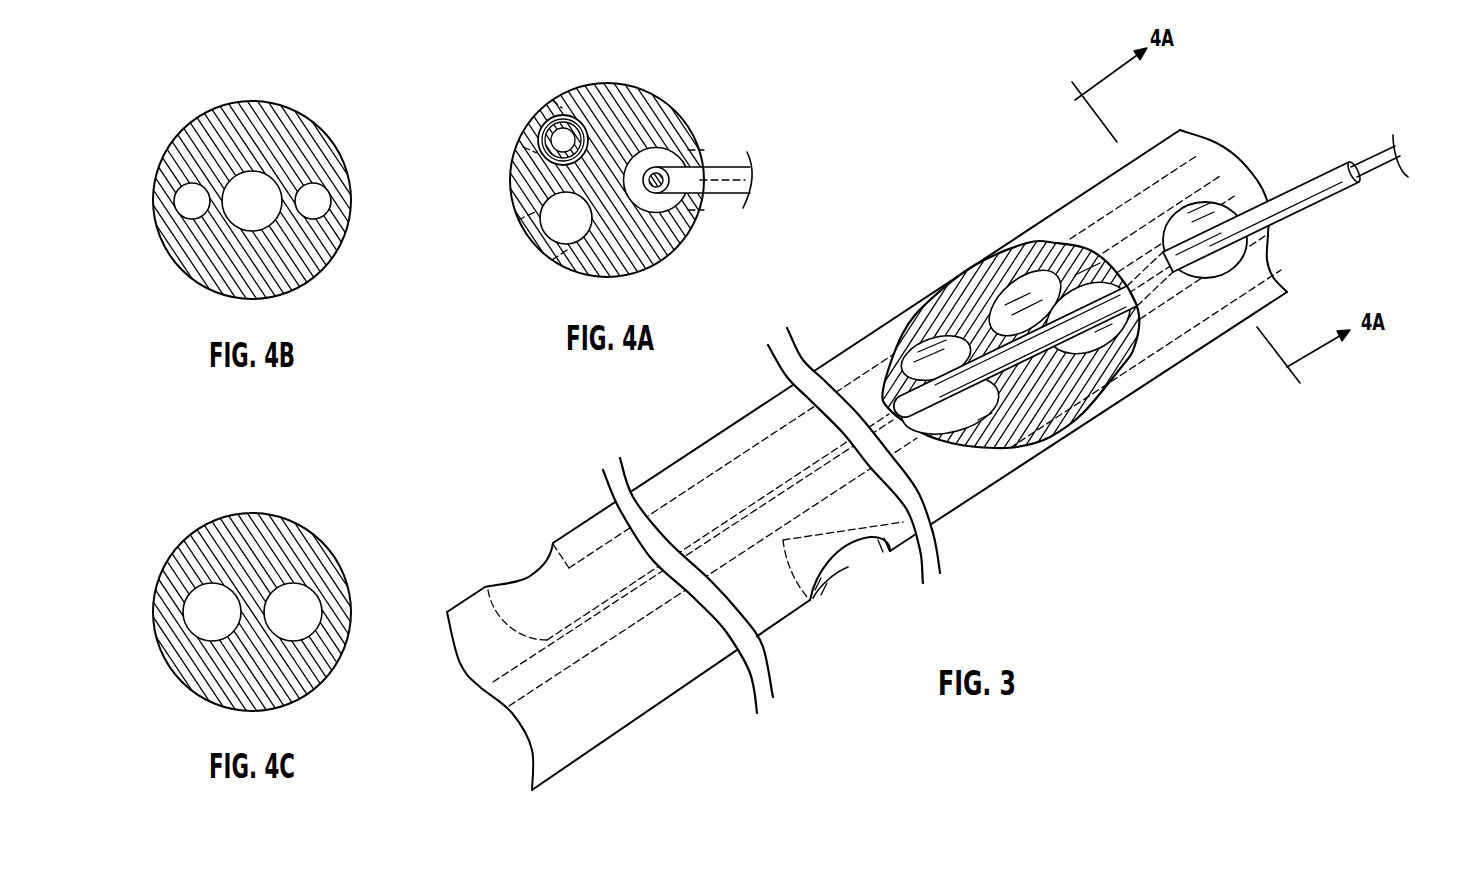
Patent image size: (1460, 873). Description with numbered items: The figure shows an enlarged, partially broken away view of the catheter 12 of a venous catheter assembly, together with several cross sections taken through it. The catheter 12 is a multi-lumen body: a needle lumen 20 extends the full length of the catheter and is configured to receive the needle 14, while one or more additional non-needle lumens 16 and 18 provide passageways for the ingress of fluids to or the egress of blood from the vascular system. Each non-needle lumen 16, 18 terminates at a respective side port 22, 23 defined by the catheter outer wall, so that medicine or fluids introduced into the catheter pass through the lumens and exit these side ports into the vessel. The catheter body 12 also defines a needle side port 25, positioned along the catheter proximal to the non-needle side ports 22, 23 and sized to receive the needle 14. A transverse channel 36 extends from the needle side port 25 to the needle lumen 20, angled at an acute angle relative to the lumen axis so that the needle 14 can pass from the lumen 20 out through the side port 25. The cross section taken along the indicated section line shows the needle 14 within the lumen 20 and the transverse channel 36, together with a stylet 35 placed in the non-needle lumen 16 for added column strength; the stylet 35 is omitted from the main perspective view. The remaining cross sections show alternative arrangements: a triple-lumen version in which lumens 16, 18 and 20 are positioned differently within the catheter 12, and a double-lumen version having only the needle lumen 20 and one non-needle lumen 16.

In FIG. 3, the catheter 12 is at (1100, 180).
In FIG. 4A, the needle 14 is at (720, 180).
In FIG. 3, the needle 14 is at (1320, 202).
In FIG. 4B, the lumen 16 is at (188, 204).
In FIG. 4C, the lumen 16 is at (190, 614).
In FIG. 4A, the lumen 16 is at (578, 118).
In FIG. 3, the lumen 16 is at (1016, 304).
In FIG. 4B, the lumen 18 is at (318, 192).
In FIG. 4A, the lumen 18 is at (563, 221).
In FIG. 4B, the lumen 20 is at (247, 190).
In FIG. 4C, the lumen 20 is at (292, 597).
In FIG. 4A, the lumen 20 is at (648, 157).
In FIG. 3, the lumen 20 is at (962, 412).
In FIG. 3, the side port 22 is at (517, 583).
In FIG. 3, the side port 23 is at (852, 568).
In FIG. 3, the needle side port 25 is at (1213, 205).
In FIG. 4A, the stylet 35 is at (547, 162).
In FIG. 4A, the transverse channel 36 is at (698, 162).
In FIG. 3, the transverse channel 36 is at (1090, 282).